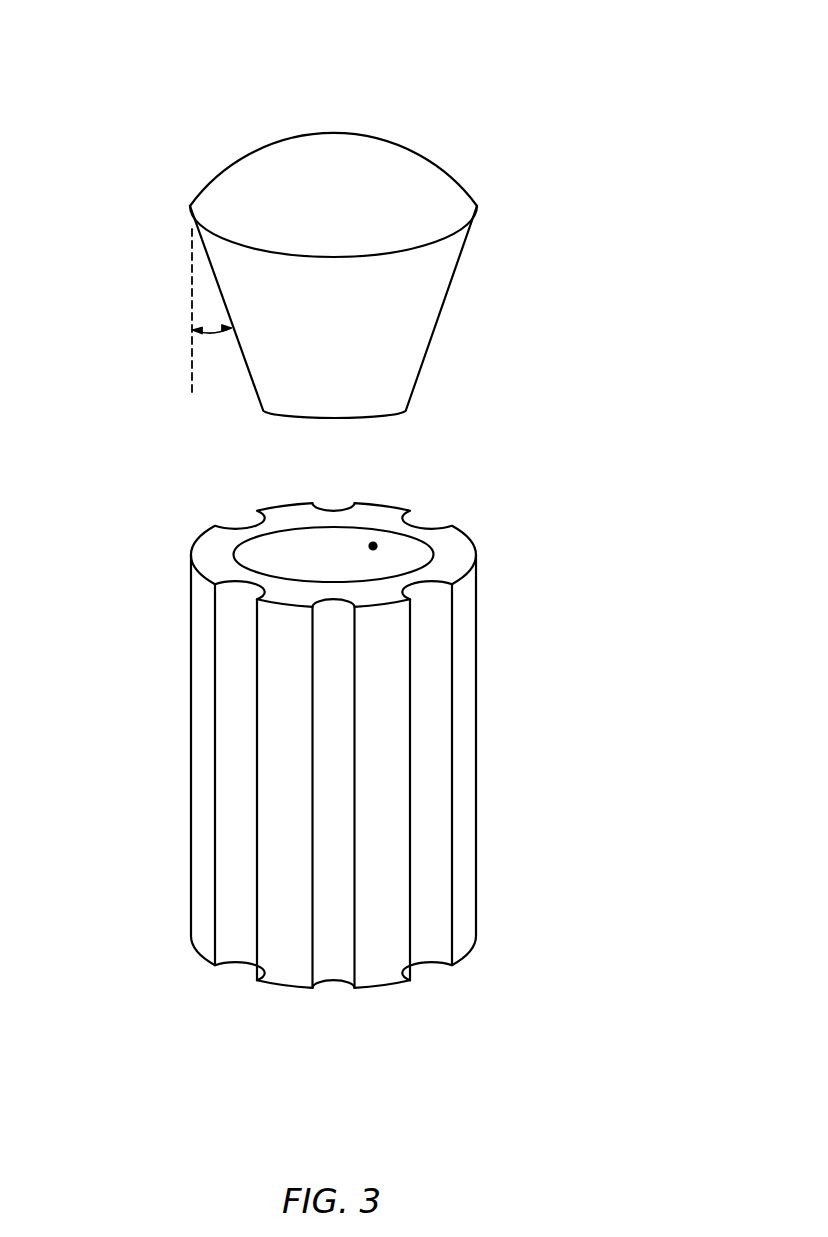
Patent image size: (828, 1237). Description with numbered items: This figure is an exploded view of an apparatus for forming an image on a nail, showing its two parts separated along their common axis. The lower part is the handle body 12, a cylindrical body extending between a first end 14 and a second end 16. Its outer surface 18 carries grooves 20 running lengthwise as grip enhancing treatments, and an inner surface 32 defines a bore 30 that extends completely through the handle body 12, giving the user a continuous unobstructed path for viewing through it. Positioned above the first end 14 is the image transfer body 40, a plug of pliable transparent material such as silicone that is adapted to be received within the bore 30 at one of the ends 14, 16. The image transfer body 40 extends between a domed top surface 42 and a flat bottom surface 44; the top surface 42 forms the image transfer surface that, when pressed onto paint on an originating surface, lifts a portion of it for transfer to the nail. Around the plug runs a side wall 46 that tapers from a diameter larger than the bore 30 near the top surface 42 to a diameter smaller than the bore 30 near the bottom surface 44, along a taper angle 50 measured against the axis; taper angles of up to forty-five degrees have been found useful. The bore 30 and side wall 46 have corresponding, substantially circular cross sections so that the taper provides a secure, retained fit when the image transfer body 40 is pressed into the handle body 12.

The handle body 12 is at (374, 745).
The first end 14 is at (334, 521).
The second end 16 is at (455, 963).
The outer surface 18 is at (462, 660).
The grooves 20 is at (232, 722).
The bore 30 is at (283, 552).
The inner surface 32 is at (373, 546).
The image transfer body 40 is at (372, 253).
The top surface 42 is at (355, 148).
The bottom surface 44 is at (397, 412).
The side wall 46 is at (443, 307).
The taper angle 50 is at (212, 333).